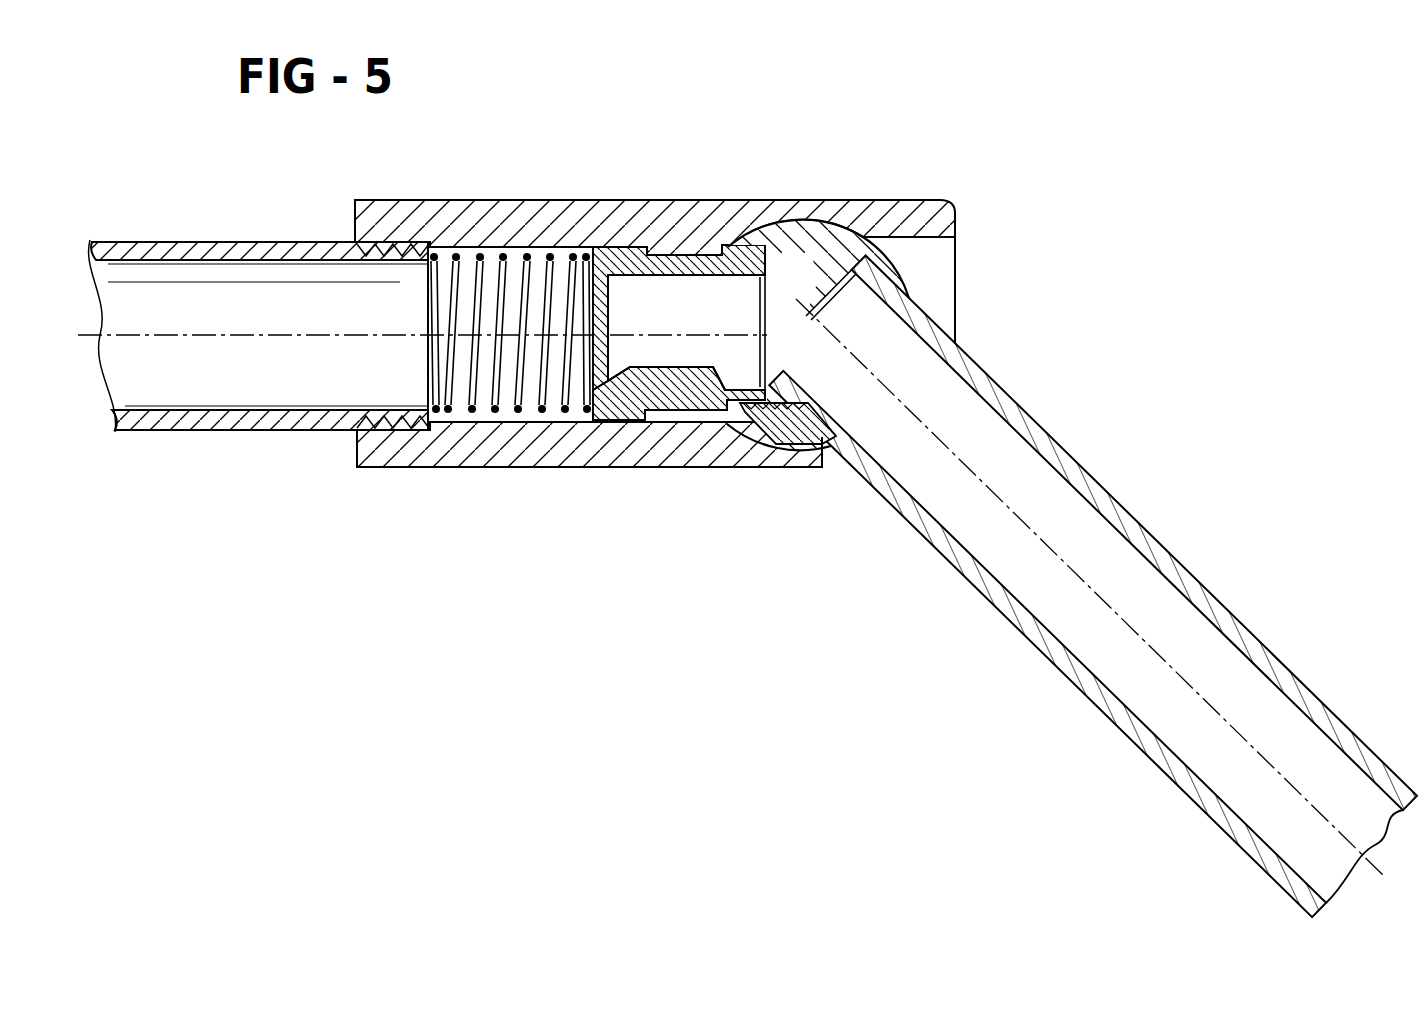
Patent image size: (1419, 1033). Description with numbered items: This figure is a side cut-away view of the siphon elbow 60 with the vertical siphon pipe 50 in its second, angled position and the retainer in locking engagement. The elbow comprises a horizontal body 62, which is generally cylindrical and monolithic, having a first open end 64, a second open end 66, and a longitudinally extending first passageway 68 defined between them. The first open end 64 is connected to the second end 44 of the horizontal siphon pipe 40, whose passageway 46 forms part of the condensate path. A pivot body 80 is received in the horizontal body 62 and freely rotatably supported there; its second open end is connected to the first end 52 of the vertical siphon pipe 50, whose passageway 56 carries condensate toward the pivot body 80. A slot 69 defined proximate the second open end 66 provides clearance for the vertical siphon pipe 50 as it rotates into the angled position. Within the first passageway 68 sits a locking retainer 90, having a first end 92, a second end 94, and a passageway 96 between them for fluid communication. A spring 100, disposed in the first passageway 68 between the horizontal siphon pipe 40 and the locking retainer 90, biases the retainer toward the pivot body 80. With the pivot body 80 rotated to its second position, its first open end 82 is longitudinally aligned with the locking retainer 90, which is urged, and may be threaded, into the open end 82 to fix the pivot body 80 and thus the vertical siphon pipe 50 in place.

The horizontal siphon pipe 40 is at (434, 347).
The second end of the horizontal pipe 44 is at (345, 432).
The passageway of the horizontal siphon pipe 46 is at (182, 395).
The vertical siphon pipe 50 is at (1093, 587).
The first end of the vertical siphon pipe 52 is at (838, 410).
The passageway of the vertical siphon pipe 56 is at (1040, 608).
The siphon elbow 60 is at (644, 285).
The horizontal body 62 is at (536, 218).
The first open end 64 is at (332, 216).
The second open end 66 is at (972, 250).
The first passageway 68 is at (773, 400).
The slot 69 is at (829, 470).
The pivot body 80 is at (818, 235).
The first open end of the pivot body 82 is at (742, 292).
The locking retainer 90 is at (662, 356).
The first end of the locking retainer 92 is at (603, 420).
The second end of the locking retainer 94 is at (780, 365).
The passageway of the retainer 96 is at (688, 355).
The spring 100 is at (498, 420).